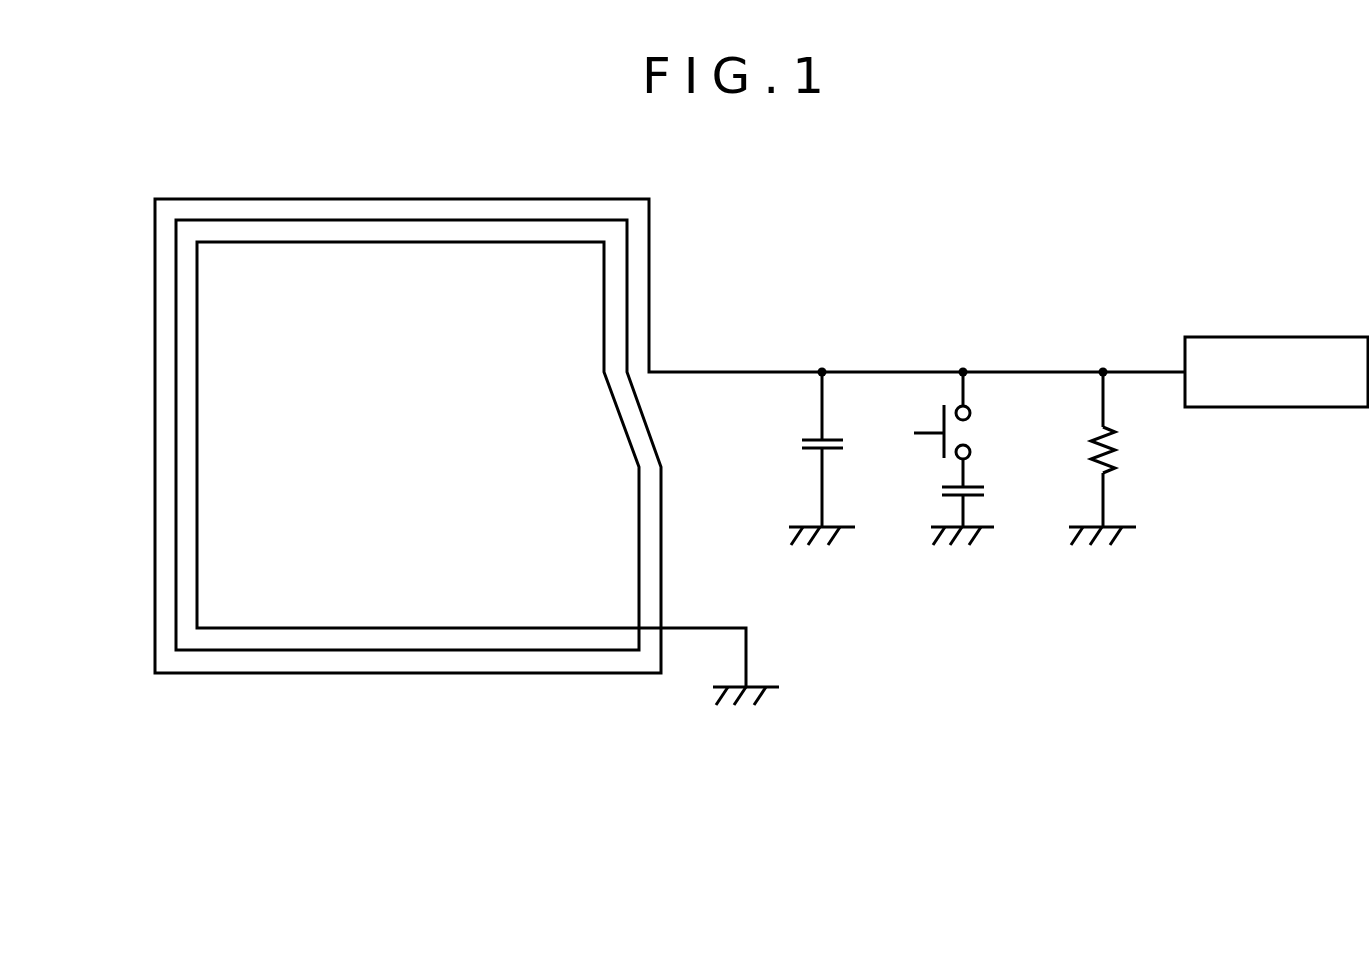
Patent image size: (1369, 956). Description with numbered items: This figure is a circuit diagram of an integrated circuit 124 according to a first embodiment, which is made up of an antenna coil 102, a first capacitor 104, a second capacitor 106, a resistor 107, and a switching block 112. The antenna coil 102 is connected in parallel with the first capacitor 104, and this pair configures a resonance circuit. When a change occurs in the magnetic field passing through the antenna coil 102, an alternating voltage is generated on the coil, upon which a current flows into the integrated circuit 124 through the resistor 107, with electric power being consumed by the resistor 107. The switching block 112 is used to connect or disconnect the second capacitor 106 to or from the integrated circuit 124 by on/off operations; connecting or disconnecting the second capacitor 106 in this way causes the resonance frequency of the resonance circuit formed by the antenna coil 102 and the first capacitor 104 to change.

The antenna coil 102 is at (153, 432).
The first capacitor 104 is at (802, 444).
The second capacitor 106 is at (943, 489).
The resistor 107 is at (1117, 452).
The switching block 112 is at (936, 437).
The integrated circuit 124 is at (880, 201).